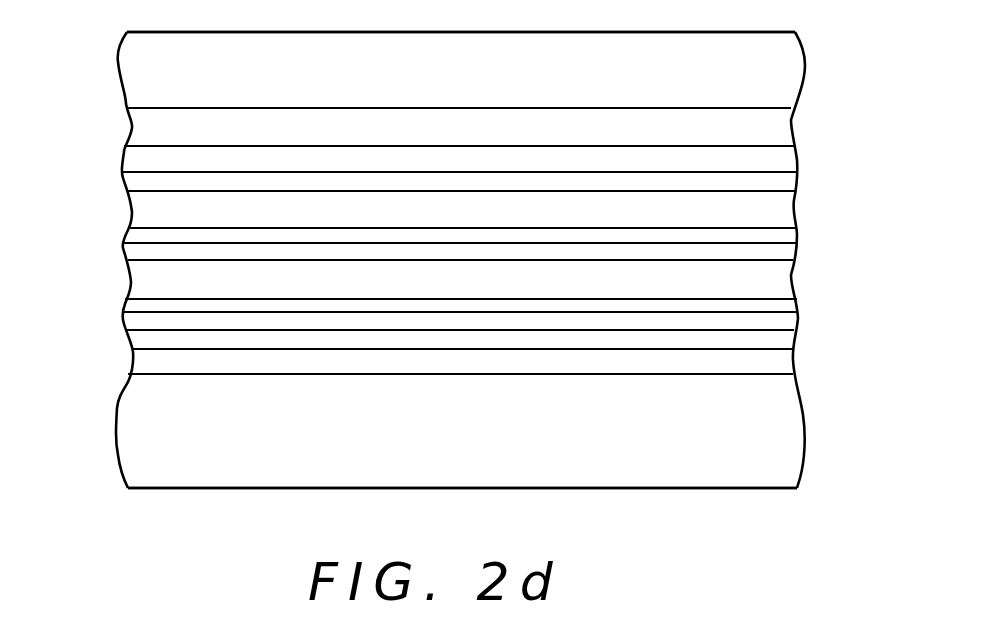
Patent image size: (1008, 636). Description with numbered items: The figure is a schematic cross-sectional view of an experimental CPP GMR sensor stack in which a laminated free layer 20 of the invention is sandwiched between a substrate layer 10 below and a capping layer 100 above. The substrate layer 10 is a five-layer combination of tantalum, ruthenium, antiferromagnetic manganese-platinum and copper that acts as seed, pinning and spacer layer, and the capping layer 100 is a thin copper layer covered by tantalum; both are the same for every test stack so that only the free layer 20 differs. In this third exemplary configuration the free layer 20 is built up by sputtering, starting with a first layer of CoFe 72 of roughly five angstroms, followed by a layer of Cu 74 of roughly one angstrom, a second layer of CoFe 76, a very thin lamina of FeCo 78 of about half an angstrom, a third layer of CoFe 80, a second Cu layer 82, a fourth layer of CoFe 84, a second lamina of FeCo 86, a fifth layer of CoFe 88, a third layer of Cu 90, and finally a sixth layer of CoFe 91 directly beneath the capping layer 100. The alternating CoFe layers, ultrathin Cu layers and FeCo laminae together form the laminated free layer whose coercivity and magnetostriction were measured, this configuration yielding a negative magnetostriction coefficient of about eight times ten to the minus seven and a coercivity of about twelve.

The capping layer 100 is at (115, 32).
The free layer 20 is at (110, 415).
The substrate layer 10 is at (110, 380).
The sixth layer of CoFe 91 is at (780, 125).
The third layer of Cu 90 is at (787, 156).
The fifth layer of CoFe 88 is at (787, 182).
The second lamina of FeCo 86 is at (775, 207).
The fourth layer of CoFe 84 is at (790, 233).
The second Cu layer 82 is at (787, 248).
The third layer of CoFe 80 is at (780, 280).
The lamina of FeCo 78 is at (792, 299).
The second layer of CoFe 76 is at (790, 318).
The layer of Cu 74 is at (780, 338).
The first layer of CoFe 72 is at (773, 358).